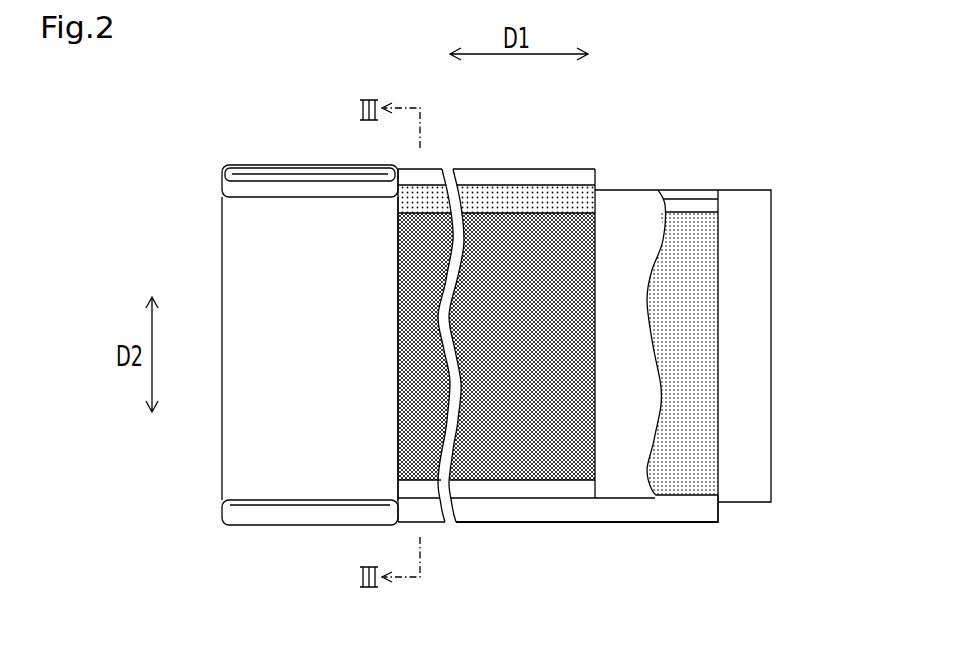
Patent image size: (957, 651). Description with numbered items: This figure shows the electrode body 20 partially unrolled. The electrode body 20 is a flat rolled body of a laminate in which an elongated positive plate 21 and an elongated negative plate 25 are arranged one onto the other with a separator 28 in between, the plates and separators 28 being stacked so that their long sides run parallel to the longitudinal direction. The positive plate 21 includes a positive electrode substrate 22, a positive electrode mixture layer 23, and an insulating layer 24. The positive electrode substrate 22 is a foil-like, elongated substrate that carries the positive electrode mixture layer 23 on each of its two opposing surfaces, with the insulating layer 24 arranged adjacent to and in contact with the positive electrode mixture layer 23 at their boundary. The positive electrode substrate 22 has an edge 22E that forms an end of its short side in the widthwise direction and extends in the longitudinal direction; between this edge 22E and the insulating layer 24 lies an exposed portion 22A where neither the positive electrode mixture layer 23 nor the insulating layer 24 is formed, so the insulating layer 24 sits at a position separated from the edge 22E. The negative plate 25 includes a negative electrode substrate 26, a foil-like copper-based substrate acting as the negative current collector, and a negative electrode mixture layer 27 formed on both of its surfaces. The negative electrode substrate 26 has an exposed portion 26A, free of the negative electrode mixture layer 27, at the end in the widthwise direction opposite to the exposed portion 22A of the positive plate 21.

The electrode body 20 is at (222, 201).
The positive plate 21 is at (560, 116).
The positive electrode substrate 22 is at (466, 176).
The exposed portion 22A is at (583, 176).
The edge 22E is at (412, 168).
The positive electrode mixture layer 23 is at (490, 215).
The insulating layer 24 is at (540, 187).
The negative plate 25 is at (703, 574).
The negative electrode substrate 26 is at (633, 525).
The exposed portion 26A is at (572, 512).
The negative electrode mixture layer 27 is at (683, 487).
The separator 28 is at (627, 208).